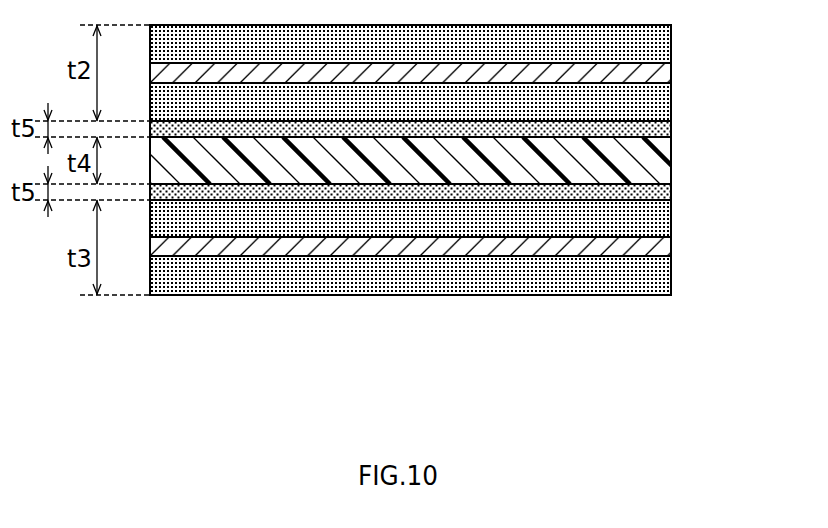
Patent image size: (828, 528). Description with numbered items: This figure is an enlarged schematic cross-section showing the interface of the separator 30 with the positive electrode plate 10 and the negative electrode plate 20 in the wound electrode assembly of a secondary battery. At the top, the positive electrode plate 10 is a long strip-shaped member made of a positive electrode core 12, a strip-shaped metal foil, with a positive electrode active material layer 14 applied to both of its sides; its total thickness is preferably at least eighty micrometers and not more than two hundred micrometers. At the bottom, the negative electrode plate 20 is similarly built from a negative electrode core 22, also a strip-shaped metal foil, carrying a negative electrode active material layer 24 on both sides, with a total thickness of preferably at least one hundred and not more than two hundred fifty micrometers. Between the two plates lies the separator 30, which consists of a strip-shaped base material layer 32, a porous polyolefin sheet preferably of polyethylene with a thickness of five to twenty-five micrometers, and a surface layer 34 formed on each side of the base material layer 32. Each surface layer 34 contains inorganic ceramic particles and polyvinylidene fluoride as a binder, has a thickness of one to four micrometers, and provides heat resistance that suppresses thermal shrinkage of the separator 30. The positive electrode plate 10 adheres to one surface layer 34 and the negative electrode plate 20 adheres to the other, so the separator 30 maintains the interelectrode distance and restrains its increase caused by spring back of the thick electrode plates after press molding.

The positive electrode plate 10 is at (472, 74).
The positive electrode core 12 is at (663, 73).
The positive electrode active material layer 14 is at (663, 45).
The negative electrode plate 20 is at (472, 249).
The negative electrode core 22 is at (663, 247).
The negative electrode active material layer 24 is at (663, 220).
The separator 30 is at (472, 163).
The base material layer 32 is at (663, 158).
The surface layer 34 is at (663, 130).